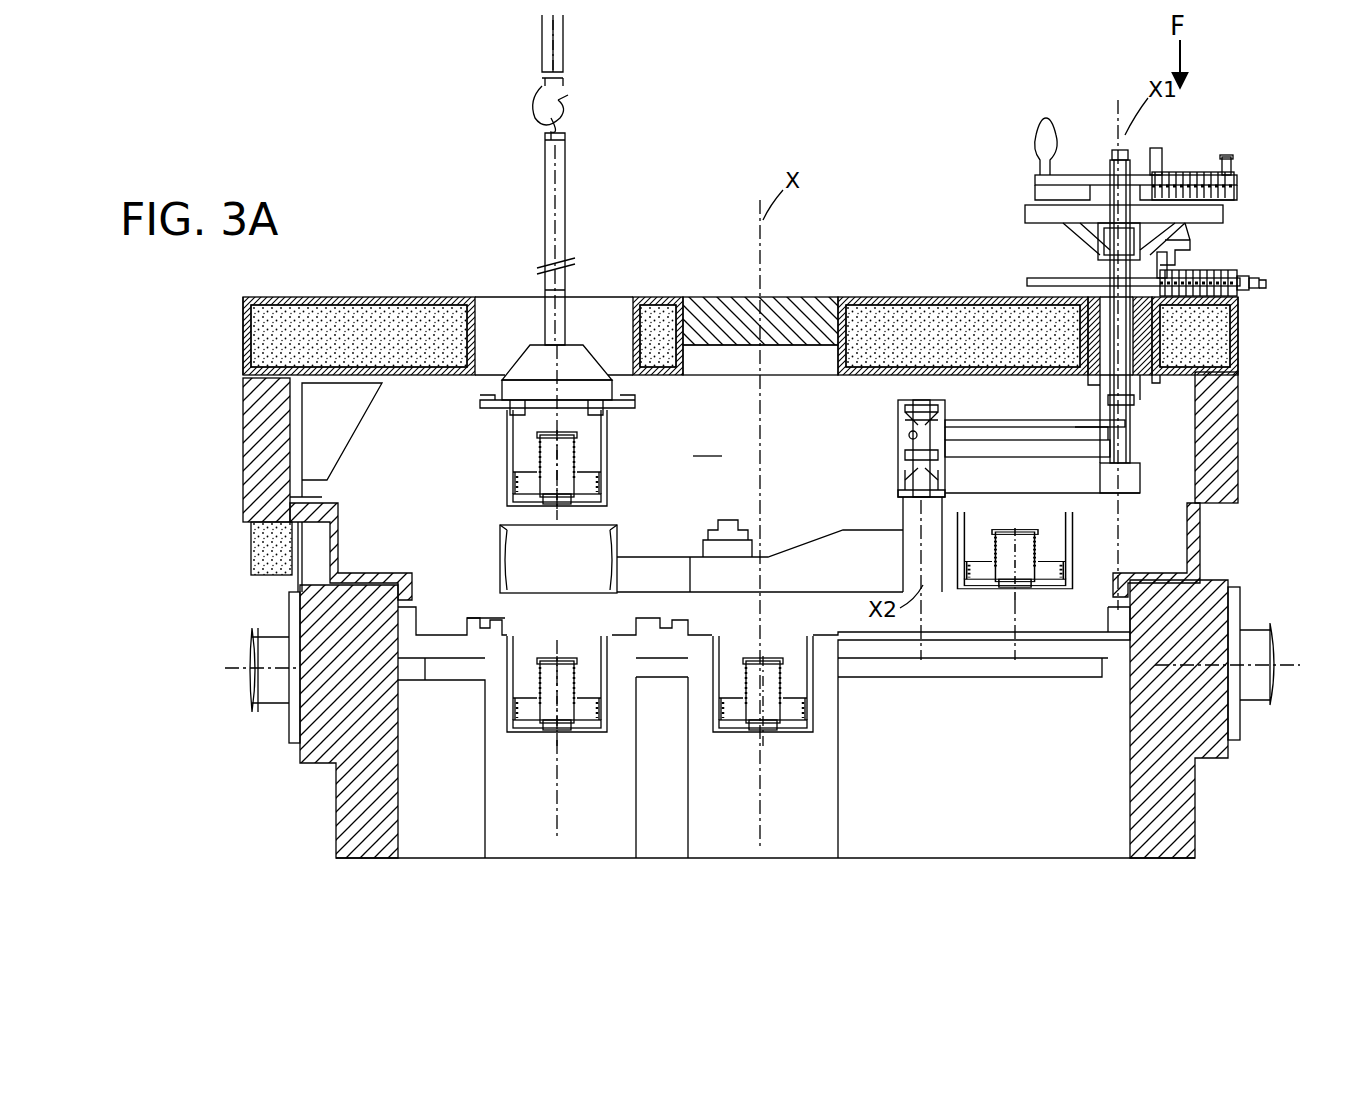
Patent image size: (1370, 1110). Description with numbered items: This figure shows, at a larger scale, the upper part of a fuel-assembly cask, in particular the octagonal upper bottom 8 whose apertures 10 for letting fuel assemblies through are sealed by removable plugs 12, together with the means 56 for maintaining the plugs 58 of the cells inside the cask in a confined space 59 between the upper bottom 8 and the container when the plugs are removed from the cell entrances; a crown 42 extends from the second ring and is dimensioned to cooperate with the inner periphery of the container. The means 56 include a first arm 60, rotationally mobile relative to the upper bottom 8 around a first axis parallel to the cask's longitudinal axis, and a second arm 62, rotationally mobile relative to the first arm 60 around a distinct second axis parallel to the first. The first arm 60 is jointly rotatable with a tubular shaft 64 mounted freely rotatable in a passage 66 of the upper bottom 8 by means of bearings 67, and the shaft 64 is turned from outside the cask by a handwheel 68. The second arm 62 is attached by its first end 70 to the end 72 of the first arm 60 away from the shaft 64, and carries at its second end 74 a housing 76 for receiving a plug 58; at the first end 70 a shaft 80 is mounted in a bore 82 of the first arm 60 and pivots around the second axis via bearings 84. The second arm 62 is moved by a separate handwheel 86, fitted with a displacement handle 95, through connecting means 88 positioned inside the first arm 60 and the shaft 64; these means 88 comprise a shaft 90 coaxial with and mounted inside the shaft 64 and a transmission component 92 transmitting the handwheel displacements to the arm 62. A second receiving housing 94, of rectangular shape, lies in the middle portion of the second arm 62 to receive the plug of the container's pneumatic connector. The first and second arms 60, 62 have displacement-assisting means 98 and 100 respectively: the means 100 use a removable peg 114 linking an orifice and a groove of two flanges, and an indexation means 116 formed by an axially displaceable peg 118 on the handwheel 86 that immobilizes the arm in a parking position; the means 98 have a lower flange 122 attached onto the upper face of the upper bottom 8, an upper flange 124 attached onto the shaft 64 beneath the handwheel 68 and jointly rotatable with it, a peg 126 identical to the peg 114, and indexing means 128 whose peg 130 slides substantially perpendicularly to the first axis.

The upper bottom 8 is at (655, 295).
The apertures 10 is at (476, 297).
The removable plugs 12 is at (790, 297).
The crown 42 is at (905, 480).
The means for maintaining plugs 56 is at (1088, 568).
The plugs 58 is at (505, 480).
The confined space 59 is at (707, 444).
The first arm 60 is at (958, 416).
The second arm 62 is at (622, 598).
The shaft 64 is at (1100, 263).
The passage 66 is at (1148, 375).
The bearings 67 is at (1160, 330).
The handwheel 68 is at (1215, 216).
The first end 70 is at (933, 565).
The end of first arm 72 is at (905, 458).
The second end 74 is at (500, 565).
The housing 76 is at (520, 543).
The shaft 80 is at (900, 412).
The bore 82 is at (905, 436).
The bearings 84 is at (900, 495).
The handwheel 86 is at (1075, 176).
The connecting means 88 is at (1072, 468).
The shaft 90 is at (1130, 430).
The transmission component 92 is at (1000, 455).
The second receiving housing 94 is at (748, 555).
The displacement handle 95 is at (1036, 136).
The displacement-assisting means 98 is at (1260, 272).
The displacement-assisting means 100 is at (1205, 150).
The removable peg 114 is at (1160, 150).
The indexation means 116 is at (1245, 182).
The peg 118 is at (1230, 160).
The lower flange 122 is at (1240, 300).
The upper flange 124 is at (1030, 280).
The peg 126 is at (1168, 266).
The indexing means 128 is at (1268, 285).
The peg 130 is at (1262, 292).